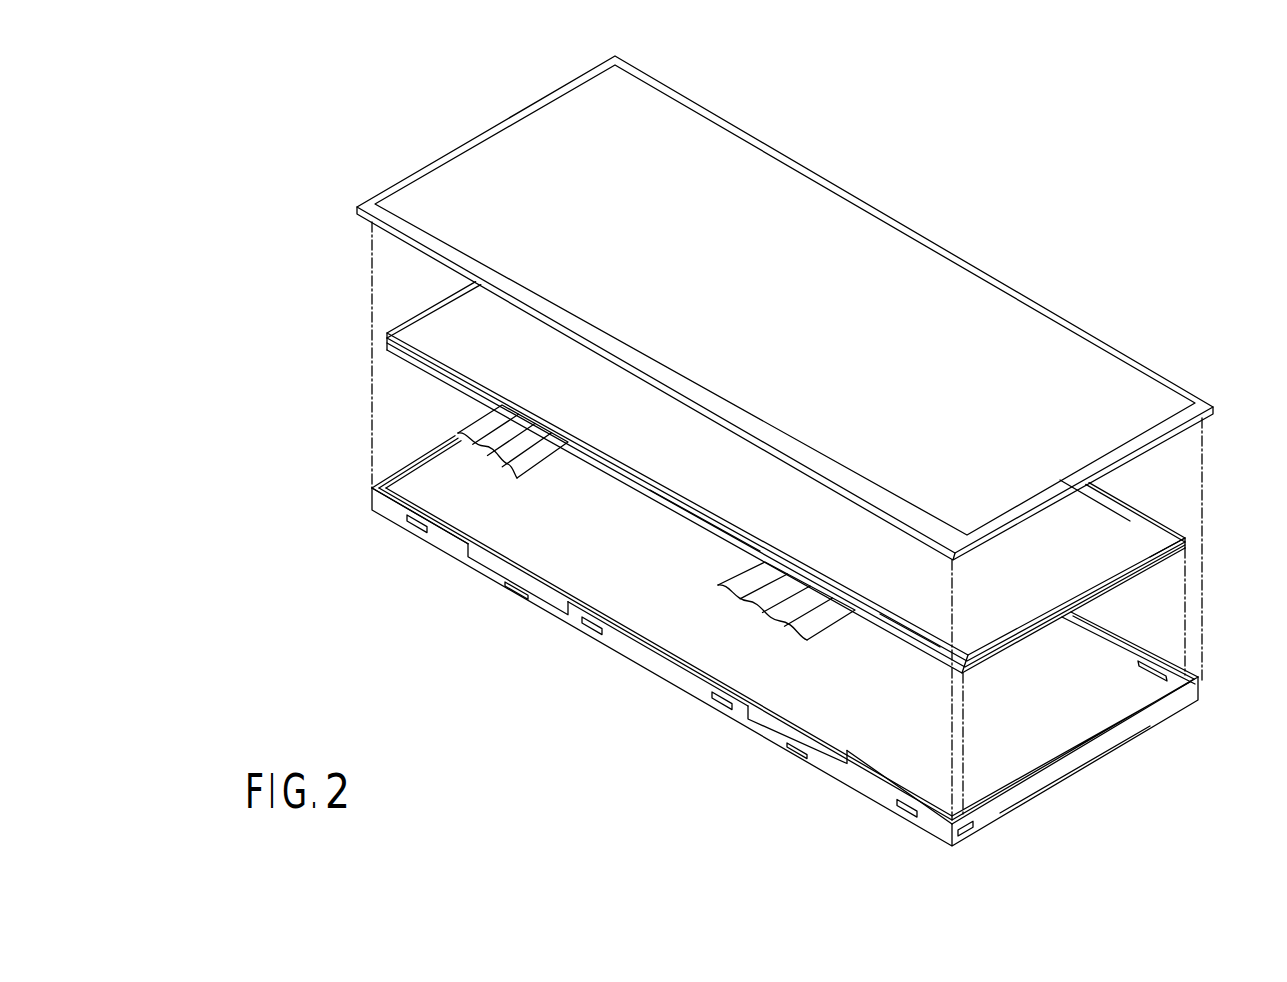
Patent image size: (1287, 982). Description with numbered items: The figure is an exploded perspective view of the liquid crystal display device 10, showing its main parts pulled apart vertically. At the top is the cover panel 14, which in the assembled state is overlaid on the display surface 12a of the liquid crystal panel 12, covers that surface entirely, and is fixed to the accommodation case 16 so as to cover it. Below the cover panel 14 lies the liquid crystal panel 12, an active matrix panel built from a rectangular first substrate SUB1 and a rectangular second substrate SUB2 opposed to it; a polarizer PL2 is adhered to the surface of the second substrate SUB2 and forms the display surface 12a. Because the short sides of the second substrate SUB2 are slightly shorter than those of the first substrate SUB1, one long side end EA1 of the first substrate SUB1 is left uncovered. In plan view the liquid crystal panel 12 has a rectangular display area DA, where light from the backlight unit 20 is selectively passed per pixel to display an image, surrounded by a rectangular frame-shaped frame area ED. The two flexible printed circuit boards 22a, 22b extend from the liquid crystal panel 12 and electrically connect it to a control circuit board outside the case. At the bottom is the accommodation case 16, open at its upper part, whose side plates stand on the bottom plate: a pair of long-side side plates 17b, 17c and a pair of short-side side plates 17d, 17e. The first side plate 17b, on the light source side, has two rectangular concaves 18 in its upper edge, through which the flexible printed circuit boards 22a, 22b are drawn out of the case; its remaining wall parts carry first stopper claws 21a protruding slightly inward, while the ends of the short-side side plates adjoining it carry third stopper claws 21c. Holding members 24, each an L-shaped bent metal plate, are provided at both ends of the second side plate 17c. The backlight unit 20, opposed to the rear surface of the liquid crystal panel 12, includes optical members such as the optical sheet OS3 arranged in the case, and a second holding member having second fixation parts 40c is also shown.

The liquid crystal display device 10 is at (356, 157).
The liquid crystal panel 12 is at (291, 296).
The first substrate SUB1 is at (387, 338).
The second substrate SUB2 is at (407, 313).
The polarizer PL2 is at (437, 314).
The display surface 12a is at (690, 482).
The long side end EA1 is at (893, 630).
The display area DA is at (1102, 504).
The frame area ED is at (1168, 522).
The cover panel 14 is at (883, 236).
The accommodation case 16 is at (1122, 752).
The first side plate 17b is at (672, 685).
The second side plate 17c is at (1120, 642).
The short-side side plate 17d is at (1050, 783).
The short-side side plate 17e is at (411, 458).
The concave 18 is at (493, 560).
The backlight unit 20 is at (440, 499).
The first stopper claw 21a is at (413, 540).
The third stopper claw 21c is at (975, 836).
The flexible printed circuit board 22a is at (512, 456).
The flexible printed circuit board 22b is at (796, 620).
The holding member 24 is at (1153, 663).
The second fixation part 40c is at (493, 576).
The optical sheet OS3 is at (1108, 708).